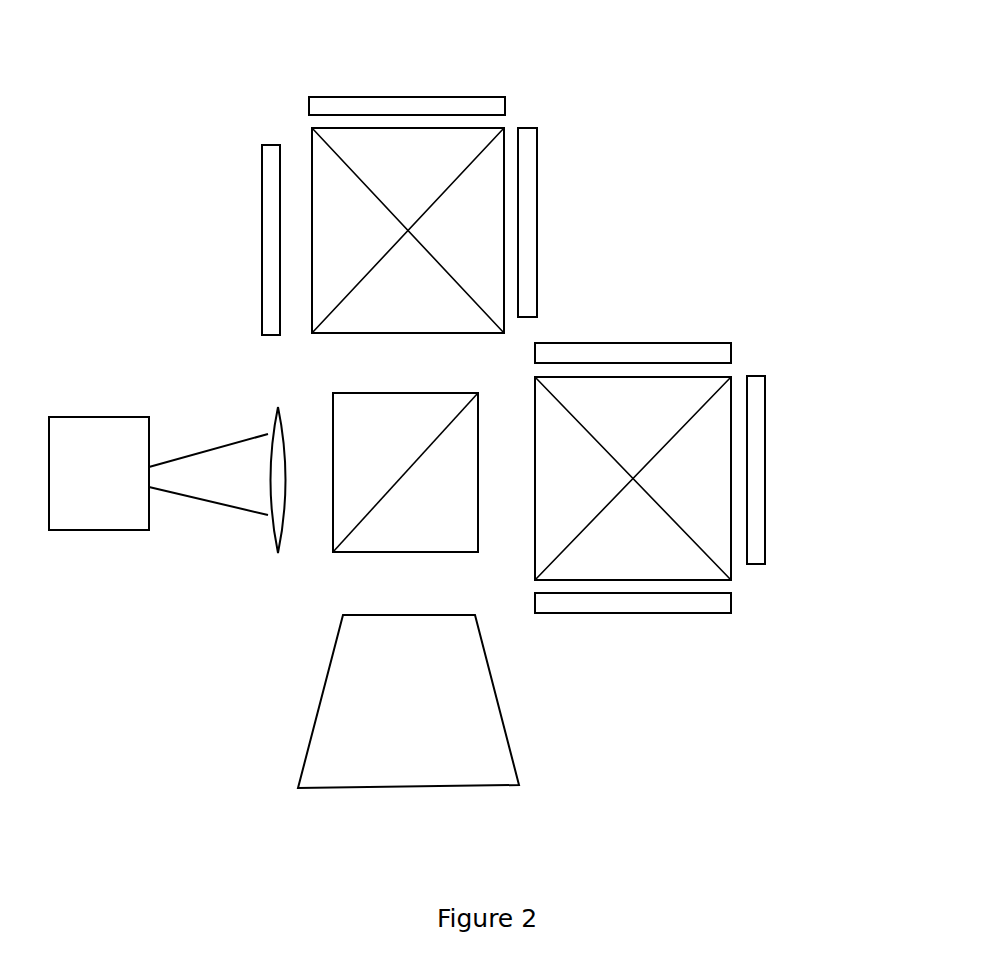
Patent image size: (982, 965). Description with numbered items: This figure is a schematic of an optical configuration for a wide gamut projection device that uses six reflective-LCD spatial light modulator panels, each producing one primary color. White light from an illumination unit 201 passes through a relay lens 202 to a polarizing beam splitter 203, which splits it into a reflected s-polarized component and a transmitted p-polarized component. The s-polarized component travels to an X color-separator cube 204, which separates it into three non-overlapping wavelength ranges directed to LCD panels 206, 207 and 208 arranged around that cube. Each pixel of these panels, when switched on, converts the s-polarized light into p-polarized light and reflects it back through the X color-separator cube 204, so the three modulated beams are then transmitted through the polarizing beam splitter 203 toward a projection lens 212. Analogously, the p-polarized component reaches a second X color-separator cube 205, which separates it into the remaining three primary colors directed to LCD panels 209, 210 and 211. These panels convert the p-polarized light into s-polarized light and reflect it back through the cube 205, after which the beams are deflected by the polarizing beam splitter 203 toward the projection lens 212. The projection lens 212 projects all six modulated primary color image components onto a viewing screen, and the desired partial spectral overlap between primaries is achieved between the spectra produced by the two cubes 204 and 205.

The illumination unit 201 is at (110, 502).
The relay lens 202 is at (280, 553).
The polarizing beam splitter 203 is at (368, 428).
The X color-separator cube 204 is at (428, 177).
The X color-separator cube 205 is at (690, 400).
The LCD panel 206 is at (265, 272).
The LCD panel 207 is at (387, 95).
The LCD panel 208 is at (542, 260).
The LCD panel 209 is at (632, 343).
The LCD panel 210 is at (762, 512).
The LCD panel 211 is at (658, 620).
The projection lens 212 is at (478, 705).